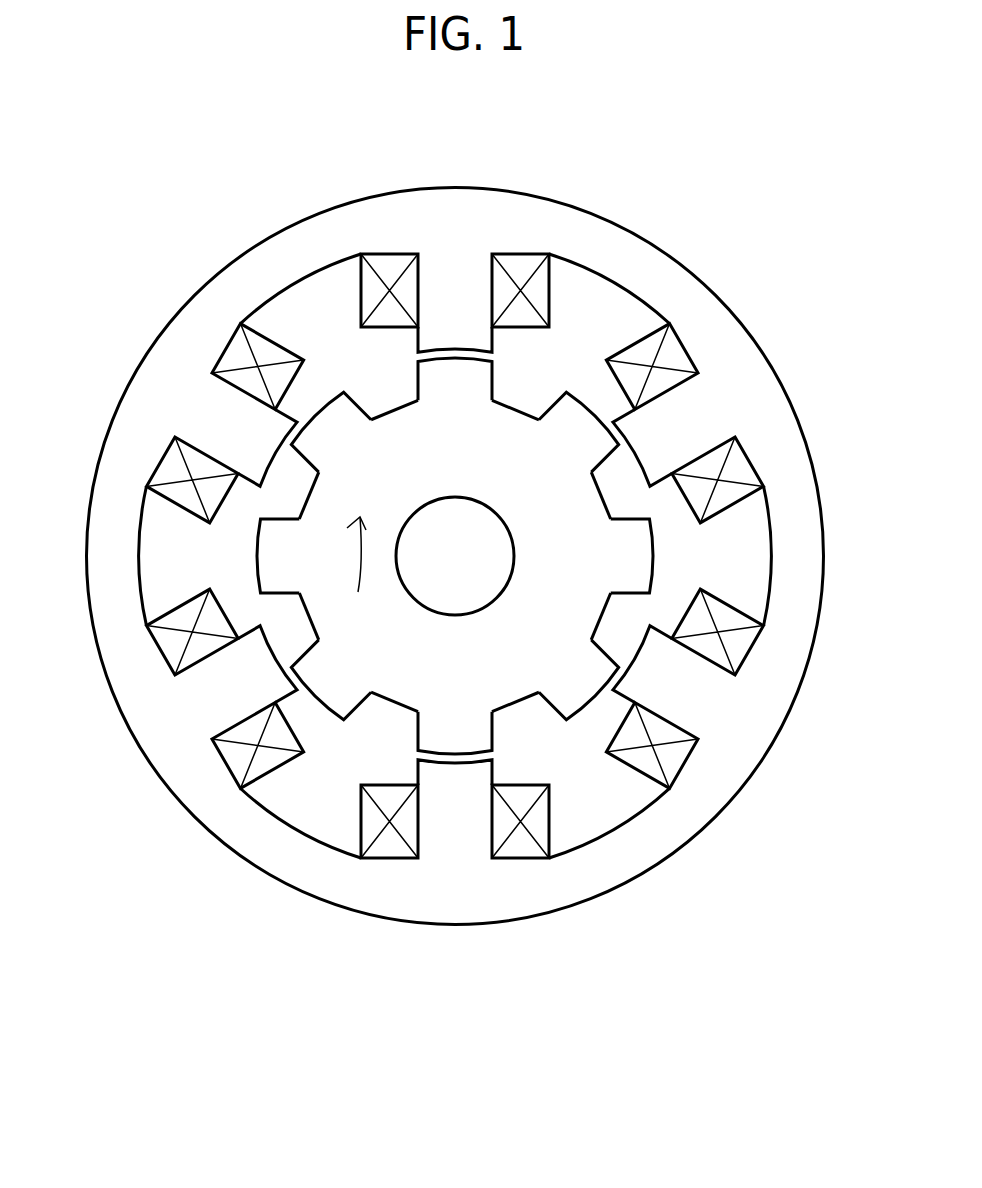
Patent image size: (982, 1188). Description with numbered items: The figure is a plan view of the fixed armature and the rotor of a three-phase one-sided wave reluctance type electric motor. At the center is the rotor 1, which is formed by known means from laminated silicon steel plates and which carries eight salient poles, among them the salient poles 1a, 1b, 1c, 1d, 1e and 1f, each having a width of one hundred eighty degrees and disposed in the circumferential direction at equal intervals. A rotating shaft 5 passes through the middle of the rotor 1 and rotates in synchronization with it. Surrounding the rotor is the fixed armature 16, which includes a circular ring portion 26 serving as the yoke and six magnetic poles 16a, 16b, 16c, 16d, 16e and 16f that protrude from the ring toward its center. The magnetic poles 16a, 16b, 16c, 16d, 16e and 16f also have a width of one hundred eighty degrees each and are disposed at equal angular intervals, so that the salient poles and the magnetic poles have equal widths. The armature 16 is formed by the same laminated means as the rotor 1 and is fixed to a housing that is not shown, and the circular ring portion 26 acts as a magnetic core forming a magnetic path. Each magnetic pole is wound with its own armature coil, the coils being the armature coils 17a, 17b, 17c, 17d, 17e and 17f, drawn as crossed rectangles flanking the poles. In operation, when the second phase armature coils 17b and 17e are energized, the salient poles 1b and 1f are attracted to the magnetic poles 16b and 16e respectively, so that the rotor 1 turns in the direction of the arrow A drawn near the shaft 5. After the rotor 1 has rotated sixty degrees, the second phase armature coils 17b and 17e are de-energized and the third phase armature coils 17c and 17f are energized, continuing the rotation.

The rotor 1 is at (408, 688).
The salient pole 1a is at (458, 361).
The salient pole 1b is at (590, 417).
The salient pole 1c is at (653, 550).
The salient pole 1d is at (592, 695).
The salient pole 1e is at (452, 755).
The salient pole 1f is at (320, 695).
The rotating shaft 5 is at (442, 613).
The fixed armature 16 is at (485, 188).
The magnetic pole 16a is at (457, 342).
The magnetic pole 16b is at (642, 452).
The magnetic pole 16c is at (642, 665).
The magnetic pole 16d is at (460, 767).
The magnetic pole 16e is at (260, 660).
The magnetic pole 16f is at (263, 452).
The armature coil 17a is at (520, 270).
The armature coil 17b is at (735, 470).
The armature coil 17c is at (678, 757).
The armature coil 17d is at (392, 848).
The armature coil 17e is at (177, 645).
The armature coil 17f is at (235, 360).
The circular ring portion 26 is at (640, 272).
The arrow A is at (357, 537).